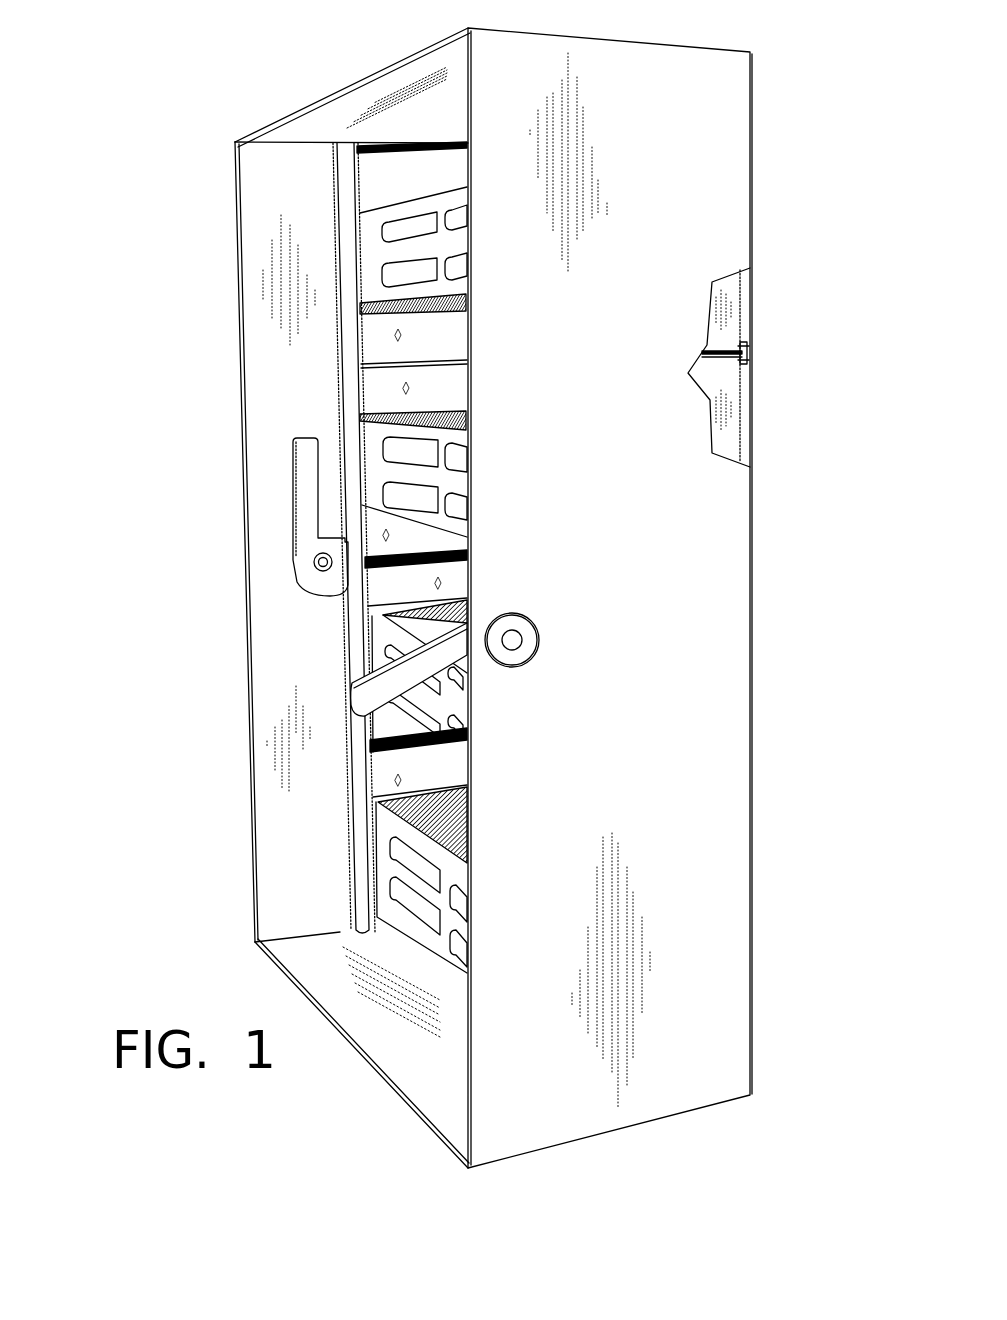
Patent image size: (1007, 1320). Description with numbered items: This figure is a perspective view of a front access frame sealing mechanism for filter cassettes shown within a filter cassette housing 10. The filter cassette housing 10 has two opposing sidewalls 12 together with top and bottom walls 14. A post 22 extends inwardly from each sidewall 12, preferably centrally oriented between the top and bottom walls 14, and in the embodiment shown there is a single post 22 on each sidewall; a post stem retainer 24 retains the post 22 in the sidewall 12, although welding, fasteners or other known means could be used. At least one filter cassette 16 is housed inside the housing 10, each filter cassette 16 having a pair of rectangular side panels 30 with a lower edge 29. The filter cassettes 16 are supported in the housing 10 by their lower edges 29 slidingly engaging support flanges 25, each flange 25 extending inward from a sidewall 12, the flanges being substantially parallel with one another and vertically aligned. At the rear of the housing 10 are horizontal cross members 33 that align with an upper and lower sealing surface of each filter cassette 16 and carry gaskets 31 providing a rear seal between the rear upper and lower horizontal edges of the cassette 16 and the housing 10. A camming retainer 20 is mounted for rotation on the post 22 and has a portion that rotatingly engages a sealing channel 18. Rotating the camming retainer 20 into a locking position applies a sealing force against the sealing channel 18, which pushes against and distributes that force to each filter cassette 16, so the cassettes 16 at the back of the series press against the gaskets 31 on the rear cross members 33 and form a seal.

The filter cassette housing 10 is at (167, 111).
The sidewall 12 is at (269, 706).
The top and bottom walls 14 is at (333, 110).
The filter cassette 16 is at (390, 258).
The sealing channel 18 is at (345, 197).
The camming retainer 20 is at (297, 513).
The post 22 is at (322, 565).
The post stem retainer 24 is at (517, 645).
The support flange 25 is at (377, 363).
The lower edge 29 is at (717, 363).
The side panel 30 is at (727, 328).
The gasket 31 is at (747, 343).
The horizontal cross member 33 is at (747, 351).